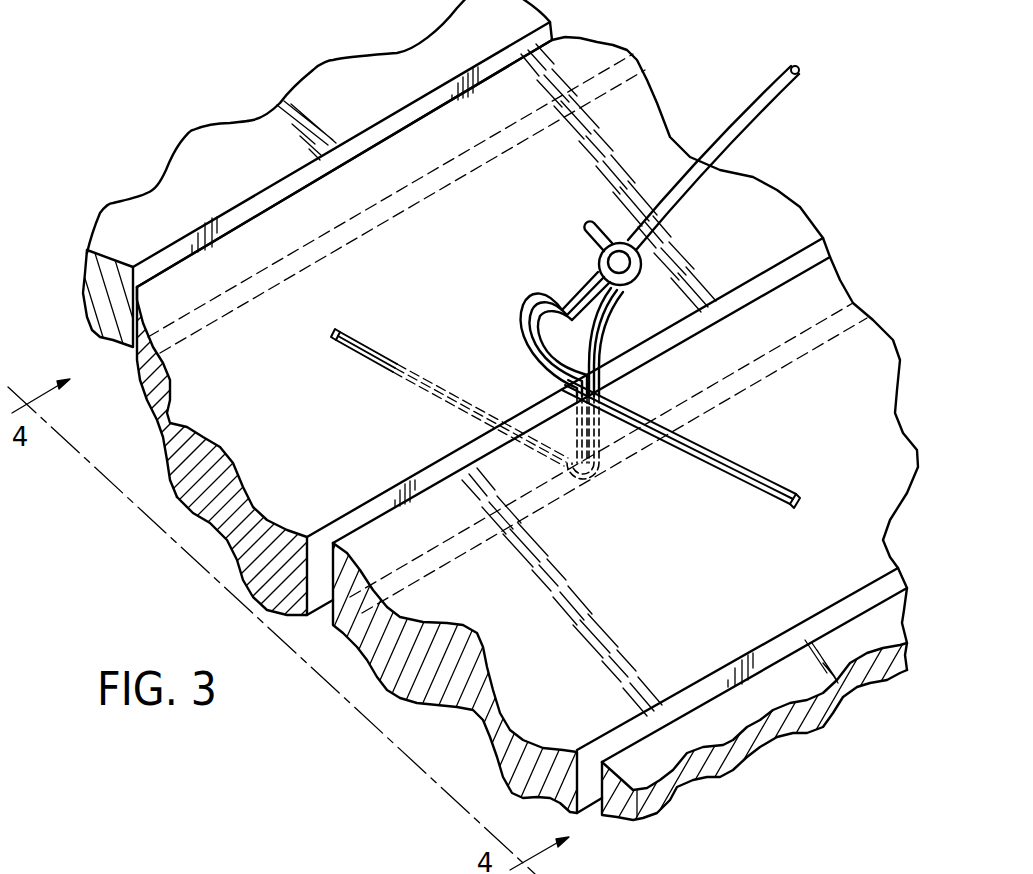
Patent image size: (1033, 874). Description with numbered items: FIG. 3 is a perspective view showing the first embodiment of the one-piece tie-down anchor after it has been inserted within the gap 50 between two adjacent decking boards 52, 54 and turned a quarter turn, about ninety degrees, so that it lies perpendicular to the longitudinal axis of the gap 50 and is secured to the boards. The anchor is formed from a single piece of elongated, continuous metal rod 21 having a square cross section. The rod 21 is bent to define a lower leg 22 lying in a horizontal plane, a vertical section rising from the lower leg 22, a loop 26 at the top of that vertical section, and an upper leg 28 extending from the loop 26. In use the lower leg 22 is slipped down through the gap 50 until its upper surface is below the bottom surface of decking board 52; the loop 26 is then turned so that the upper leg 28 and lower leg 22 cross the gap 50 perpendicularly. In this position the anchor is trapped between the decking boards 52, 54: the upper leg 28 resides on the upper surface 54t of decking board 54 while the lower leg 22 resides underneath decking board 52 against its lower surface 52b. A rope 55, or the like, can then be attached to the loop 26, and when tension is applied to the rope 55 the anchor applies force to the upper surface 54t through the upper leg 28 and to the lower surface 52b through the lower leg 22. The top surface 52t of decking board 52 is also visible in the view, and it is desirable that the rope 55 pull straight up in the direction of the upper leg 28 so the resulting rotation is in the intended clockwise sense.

The metal rod 21 is at (545, 291).
The lower leg 22 is at (363, 358).
The loop 26 is at (525, 298).
The upper leg 28 is at (707, 455).
The gap 50 is at (806, 257).
The decking board 52 is at (217, 413).
The top surface of first board 52t is at (340, 298).
The lower surface of decking board 52b is at (180, 503).
The decking board 54 is at (513, 650).
The upper surface of decking board 54t is at (713, 602).
The rope 55 is at (760, 103).